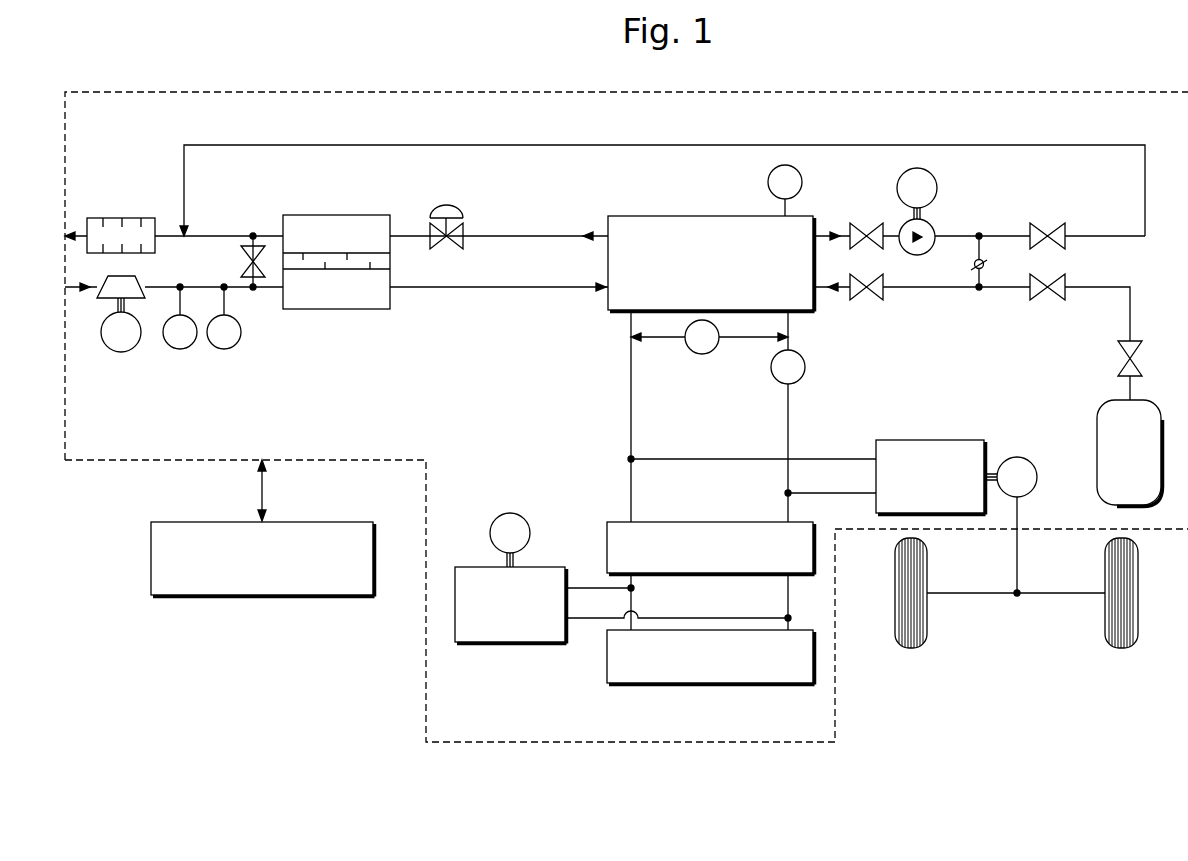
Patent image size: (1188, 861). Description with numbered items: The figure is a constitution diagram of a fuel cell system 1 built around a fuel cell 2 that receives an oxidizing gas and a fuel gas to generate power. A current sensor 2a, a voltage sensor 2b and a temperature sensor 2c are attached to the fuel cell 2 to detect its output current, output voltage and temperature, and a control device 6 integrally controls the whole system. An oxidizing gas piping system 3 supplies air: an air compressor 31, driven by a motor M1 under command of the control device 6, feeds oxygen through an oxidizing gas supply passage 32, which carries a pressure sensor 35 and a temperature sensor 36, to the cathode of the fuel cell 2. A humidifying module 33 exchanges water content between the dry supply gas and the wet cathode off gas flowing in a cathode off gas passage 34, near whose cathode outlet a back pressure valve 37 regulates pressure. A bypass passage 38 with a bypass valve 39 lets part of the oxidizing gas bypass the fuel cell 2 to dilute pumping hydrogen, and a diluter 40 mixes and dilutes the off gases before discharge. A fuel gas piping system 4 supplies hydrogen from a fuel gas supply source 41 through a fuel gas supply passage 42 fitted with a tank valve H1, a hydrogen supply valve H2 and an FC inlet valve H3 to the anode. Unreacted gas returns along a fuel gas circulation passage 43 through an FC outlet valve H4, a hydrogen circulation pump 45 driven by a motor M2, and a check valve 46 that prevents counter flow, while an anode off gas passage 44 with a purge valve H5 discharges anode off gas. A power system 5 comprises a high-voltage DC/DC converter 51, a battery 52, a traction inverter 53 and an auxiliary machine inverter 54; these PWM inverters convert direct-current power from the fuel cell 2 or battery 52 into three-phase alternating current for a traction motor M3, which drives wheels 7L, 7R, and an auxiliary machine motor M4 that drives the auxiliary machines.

The fuel cell system 1 is at (50, 812).
The fuel cell 2 is at (655, 216).
The current sensor 2a is at (805, 372).
The voltage sensor 2b is at (695, 353).
The temperature sensor 2c is at (770, 181).
The oxidizing gas piping system 3 is at (336, 282).
The fuel gas piping system 4 is at (993, 337).
The power system 5 is at (739, 563).
The control device 6 is at (190, 596).
The wheel 7L is at (905, 650).
The wheel 7R is at (1115, 650).
The air compressor 31 is at (107, 314).
The oxidizing gas supply passage 32 is at (455, 289).
The humidifying module 33 is at (360, 312).
The cathode off gas passage 34 is at (515, 236).
The pressure sensor 35 is at (176, 350).
The temperature sensor 36 is at (228, 350).
The back pressure valve 37 is at (446, 205).
The bypass passage 38 is at (250, 238).
The bypass valve 39 is at (246, 265).
The diluter 40 is at (113, 218).
The fuel gas supply source 41 is at (1097, 436).
The fuel gas supply passage 42 is at (962, 290).
The fuel gas circulation passage 43 is at (962, 240).
The anode off gas passage 44 is at (1096, 236).
The hydrogen circulation pump 45 is at (942, 211).
The check valve 46 is at (985, 266).
The high-voltage DC/DC converter 51 is at (680, 522).
The battery 52 is at (700, 684).
The traction inverter 53 is at (954, 453).
The auxiliary machine inverter 54 is at (616, 578).
The motor M1 is at (112, 299).
The motor M2 is at (917, 188).
The traction motor M3 is at (1017, 477).
The auxiliary machine motor M4 is at (510, 533).
The tank valve H1 is at (1145, 358).
The hydrogen supply valve H2 is at (1047, 300).
The FC inlet valve H3 is at (866, 304).
The FC outlet valve H4 is at (866, 226).
The purge valve H5 is at (1047, 226).